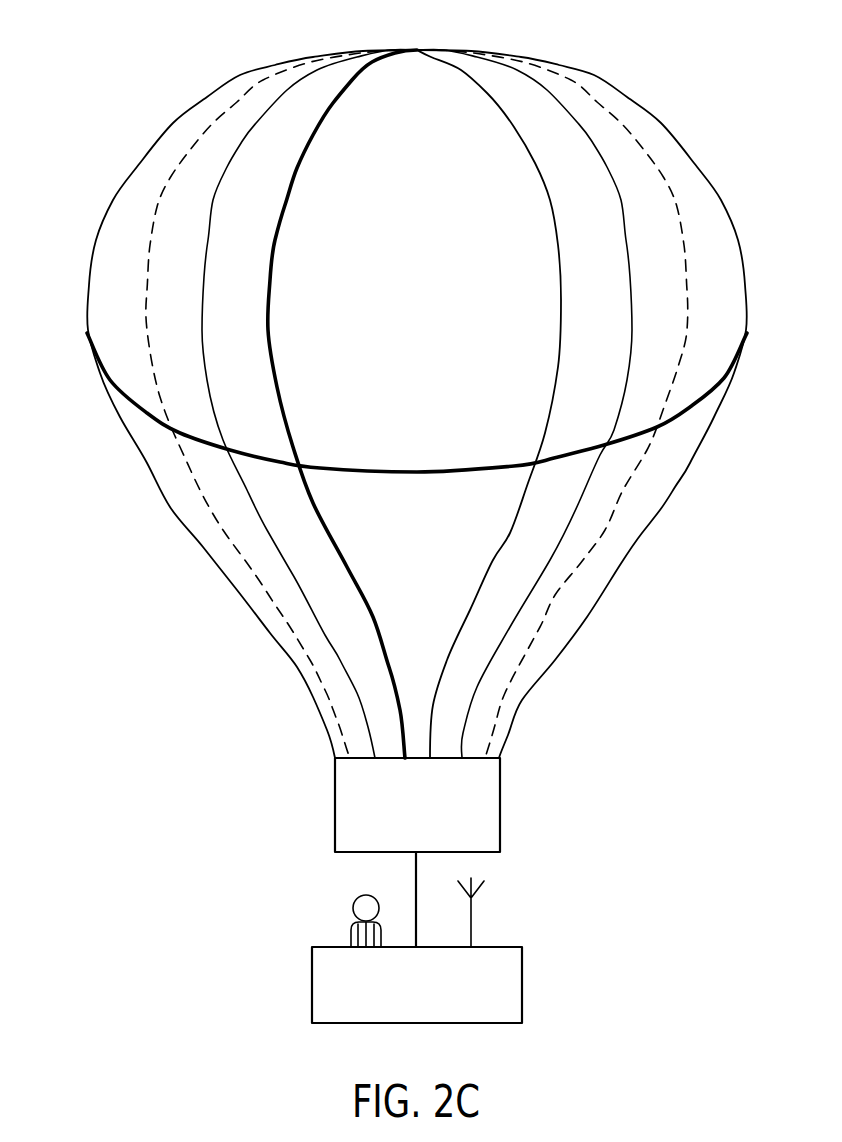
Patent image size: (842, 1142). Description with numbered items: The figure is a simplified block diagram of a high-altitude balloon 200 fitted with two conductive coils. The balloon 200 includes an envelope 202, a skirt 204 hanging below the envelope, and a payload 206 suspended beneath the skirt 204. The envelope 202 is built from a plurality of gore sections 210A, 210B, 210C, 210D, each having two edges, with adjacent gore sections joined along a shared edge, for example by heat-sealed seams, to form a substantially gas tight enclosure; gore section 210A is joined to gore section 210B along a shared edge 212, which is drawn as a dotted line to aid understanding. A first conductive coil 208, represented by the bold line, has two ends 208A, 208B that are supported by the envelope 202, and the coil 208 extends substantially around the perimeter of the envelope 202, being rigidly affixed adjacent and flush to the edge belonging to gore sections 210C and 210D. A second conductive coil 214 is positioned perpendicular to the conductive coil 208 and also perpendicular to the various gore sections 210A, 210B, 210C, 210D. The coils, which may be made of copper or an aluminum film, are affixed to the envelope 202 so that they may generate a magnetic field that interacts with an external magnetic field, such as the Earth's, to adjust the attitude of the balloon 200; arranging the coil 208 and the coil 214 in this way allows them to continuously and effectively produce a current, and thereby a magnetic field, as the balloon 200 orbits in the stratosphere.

The high-altitude balloon 200 is at (705, 82).
The envelope 202 is at (740, 250).
The skirt 204 is at (500, 800).
The payload 206 is at (522, 987).
The conductive coil 208 is at (373, 618).
The end of conductive coil 208A is at (447, 50).
The end of conductive coil 208B is at (425, 758).
The gore section 210A is at (103, 297).
The gore section 210B is at (280, 512).
The gore section 210C is at (252, 259).
The gore section 210D is at (503, 502).
The shared edge 212 is at (197, 483).
The conductive coil 214 is at (703, 393).